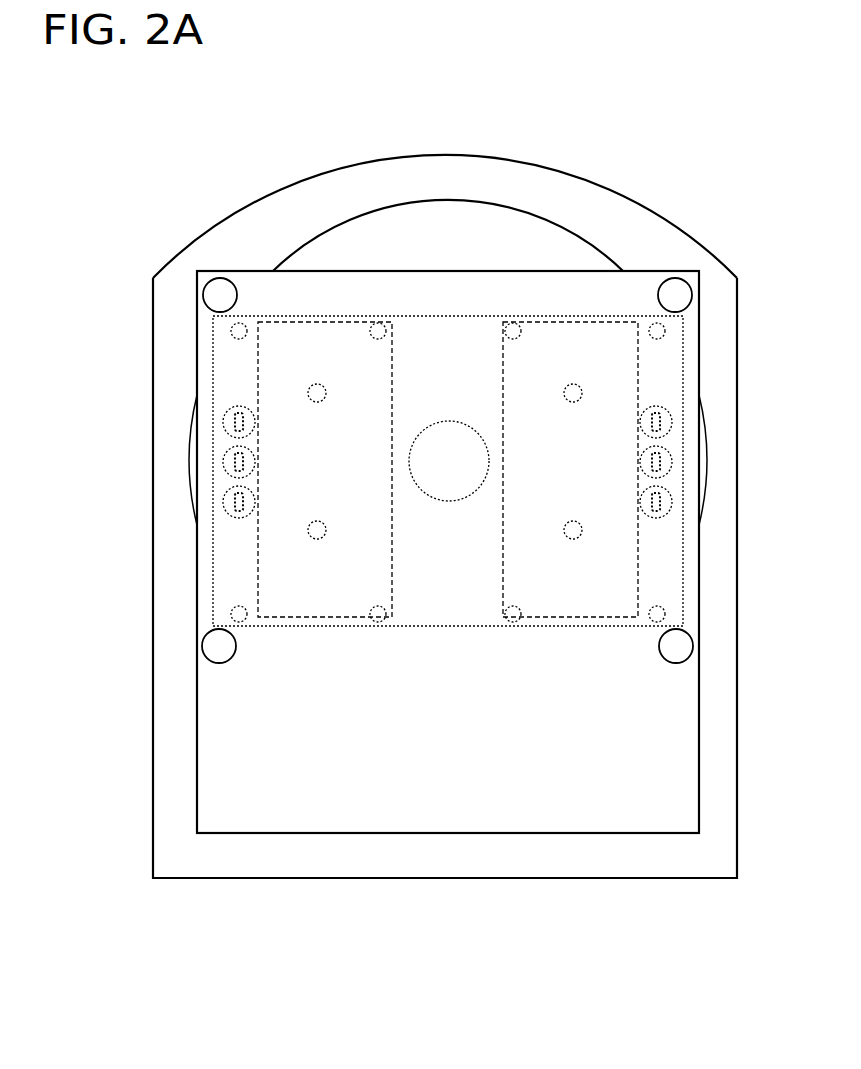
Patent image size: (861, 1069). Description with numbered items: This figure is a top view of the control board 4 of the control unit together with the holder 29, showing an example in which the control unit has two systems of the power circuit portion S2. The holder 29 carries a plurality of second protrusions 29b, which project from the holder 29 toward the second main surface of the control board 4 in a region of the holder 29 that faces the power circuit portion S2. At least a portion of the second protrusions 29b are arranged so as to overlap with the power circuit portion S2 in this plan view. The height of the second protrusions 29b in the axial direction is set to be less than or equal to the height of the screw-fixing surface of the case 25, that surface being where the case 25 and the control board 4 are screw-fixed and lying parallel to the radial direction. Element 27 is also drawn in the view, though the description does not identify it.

The control board 4 is at (257, 292).
The case 25 is at (438, 185).
The opening 27 is at (344, 248).
The holder 29 is at (640, 318).
The second protrusions 29b is at (313, 384).
The power circuit portion S2 is at (383, 347).